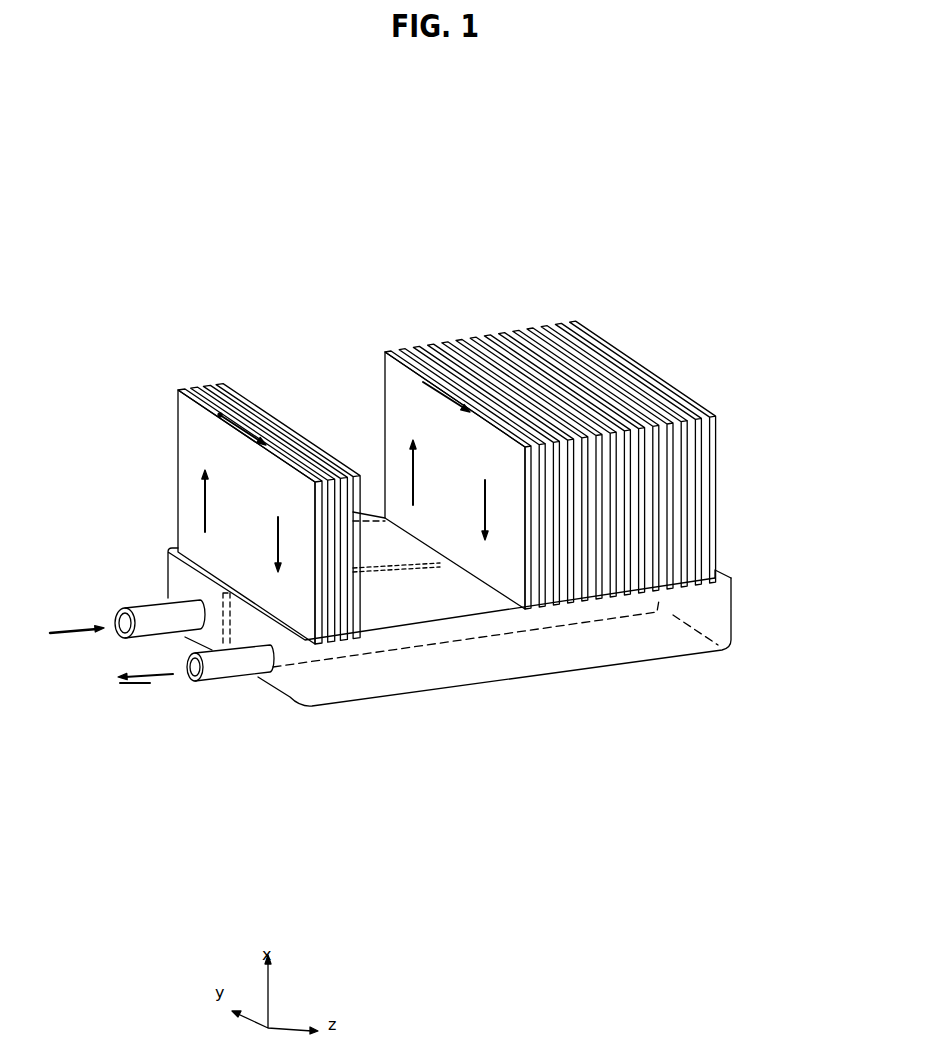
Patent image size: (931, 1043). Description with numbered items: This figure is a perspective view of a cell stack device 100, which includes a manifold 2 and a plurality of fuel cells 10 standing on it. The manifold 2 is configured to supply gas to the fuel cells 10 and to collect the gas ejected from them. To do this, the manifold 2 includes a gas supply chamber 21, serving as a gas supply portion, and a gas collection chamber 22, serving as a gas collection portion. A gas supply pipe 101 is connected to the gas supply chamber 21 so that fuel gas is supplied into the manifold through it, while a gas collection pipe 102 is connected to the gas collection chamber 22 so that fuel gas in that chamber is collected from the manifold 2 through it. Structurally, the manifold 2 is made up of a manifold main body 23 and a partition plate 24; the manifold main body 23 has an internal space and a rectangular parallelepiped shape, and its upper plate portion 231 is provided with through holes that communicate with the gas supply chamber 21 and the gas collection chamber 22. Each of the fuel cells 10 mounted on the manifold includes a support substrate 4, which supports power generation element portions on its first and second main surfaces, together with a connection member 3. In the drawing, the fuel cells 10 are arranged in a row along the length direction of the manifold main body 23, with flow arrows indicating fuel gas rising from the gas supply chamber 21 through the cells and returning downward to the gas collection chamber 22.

The cell stack device 100 is at (424, 236).
The fuel cells 10 is at (152, 469).
The support substrate 4 is at (176, 434).
The connection member 3 is at (198, 382).
The gas supply chamber 21 is at (385, 550).
The gas collection chamber 22 is at (477, 640).
The manifold 2 is at (266, 694).
The manifold main body 23 is at (312, 687).
The upper plate portion 231 is at (728, 560).
The partition plate 24 is at (430, 595).
The gas supply pipe 101 is at (126, 607).
The gas collection pipe 102 is at (223, 675).